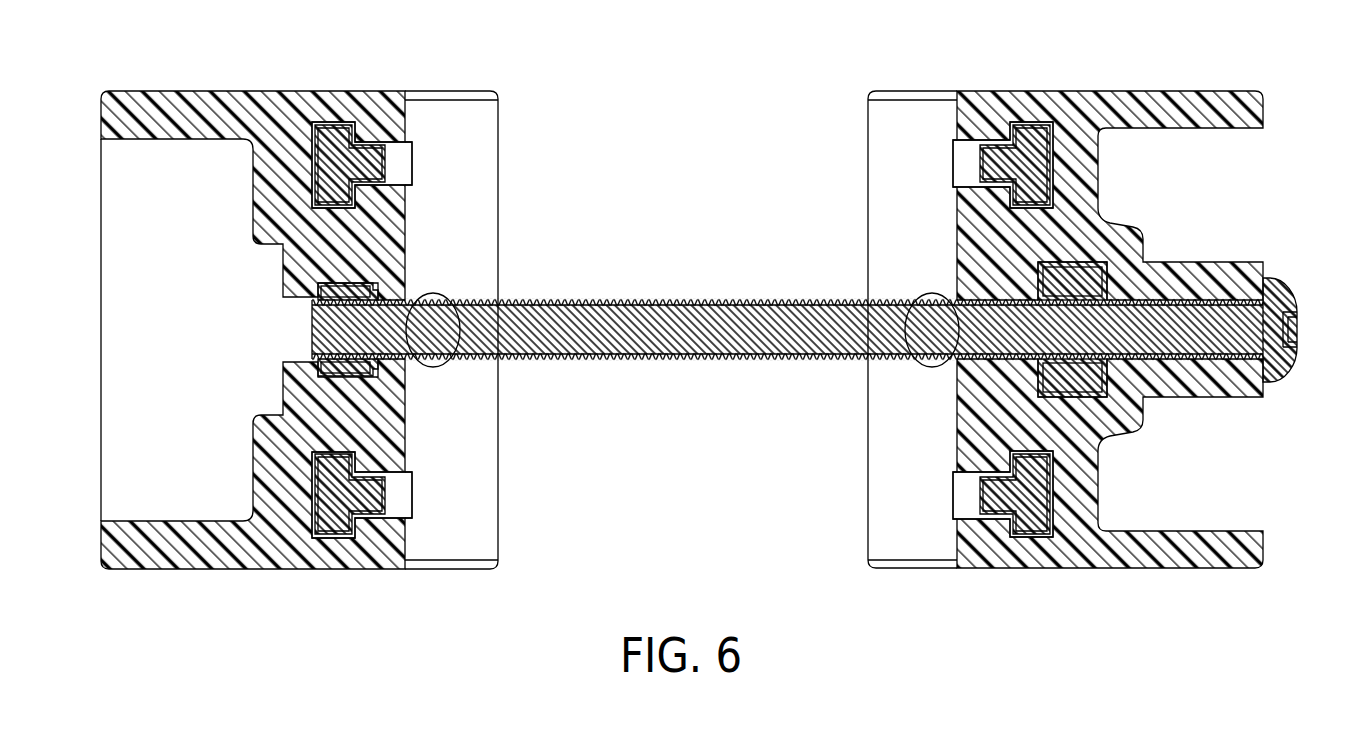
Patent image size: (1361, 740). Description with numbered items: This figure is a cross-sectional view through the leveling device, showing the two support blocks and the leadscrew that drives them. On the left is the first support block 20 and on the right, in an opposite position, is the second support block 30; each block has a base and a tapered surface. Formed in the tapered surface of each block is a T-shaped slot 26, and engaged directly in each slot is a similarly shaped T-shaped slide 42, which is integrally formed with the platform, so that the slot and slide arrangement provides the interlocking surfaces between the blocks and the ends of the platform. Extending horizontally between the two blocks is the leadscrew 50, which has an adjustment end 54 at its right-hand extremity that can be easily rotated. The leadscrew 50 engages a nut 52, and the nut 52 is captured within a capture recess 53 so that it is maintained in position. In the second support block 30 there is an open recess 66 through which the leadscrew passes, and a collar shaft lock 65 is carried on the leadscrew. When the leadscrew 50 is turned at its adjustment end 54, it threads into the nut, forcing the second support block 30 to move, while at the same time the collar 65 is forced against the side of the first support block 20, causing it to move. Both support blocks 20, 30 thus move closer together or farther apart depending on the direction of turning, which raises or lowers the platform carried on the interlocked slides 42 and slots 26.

The first support block 20 is at (217, 570).
The second support block 30 is at (1166, 570).
The T-shaped slot 26 is at (338, 512).
The T-shaped slide 42 is at (334, 140).
The leadscrew 50 is at (711, 330).
The nut 52 is at (362, 290).
The capture recess 53 is at (395, 296).
The leadscrew adjustment end 54 is at (1295, 290).
The collar shaft lock 65 is at (1067, 372).
The open recess 66 is at (1060, 264).